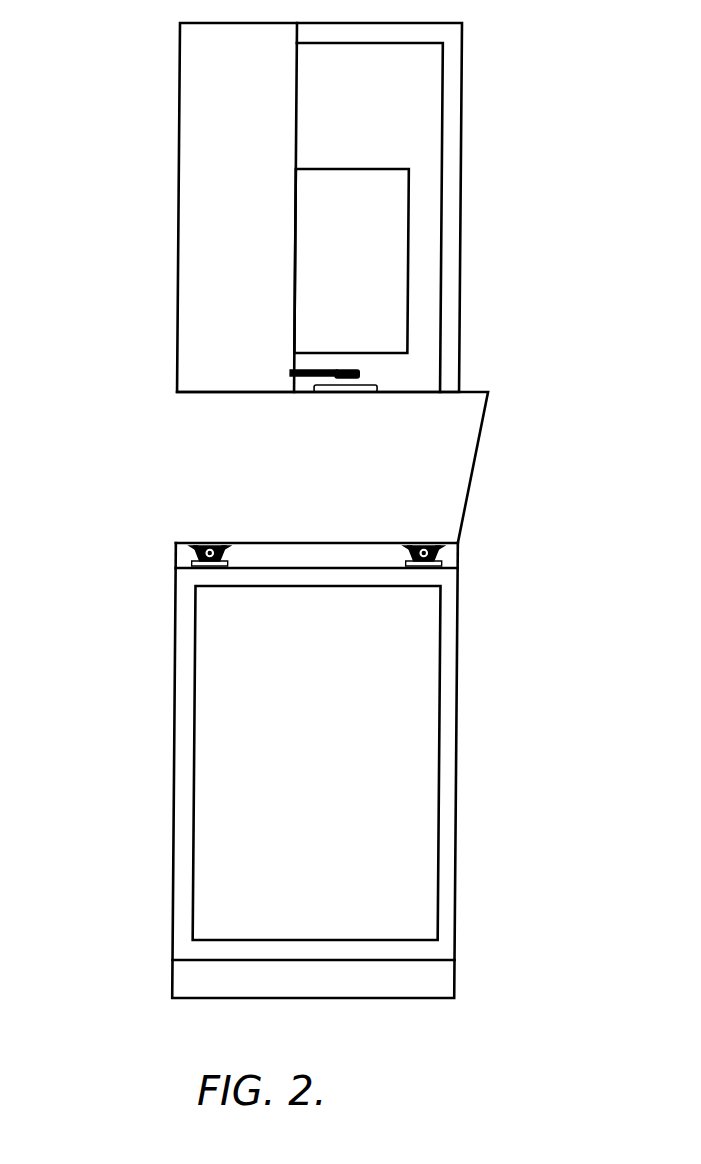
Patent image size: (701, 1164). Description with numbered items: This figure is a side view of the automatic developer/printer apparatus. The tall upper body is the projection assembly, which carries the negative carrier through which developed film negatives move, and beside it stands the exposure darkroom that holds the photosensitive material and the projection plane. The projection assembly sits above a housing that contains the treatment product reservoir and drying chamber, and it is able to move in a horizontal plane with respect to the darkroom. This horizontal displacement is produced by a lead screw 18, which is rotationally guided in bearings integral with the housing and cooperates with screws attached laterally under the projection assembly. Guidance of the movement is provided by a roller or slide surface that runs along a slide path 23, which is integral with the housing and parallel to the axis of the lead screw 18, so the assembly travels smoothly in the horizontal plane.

The lead screw 18 is at (443, 555).
The slide path 23 is at (186, 558).